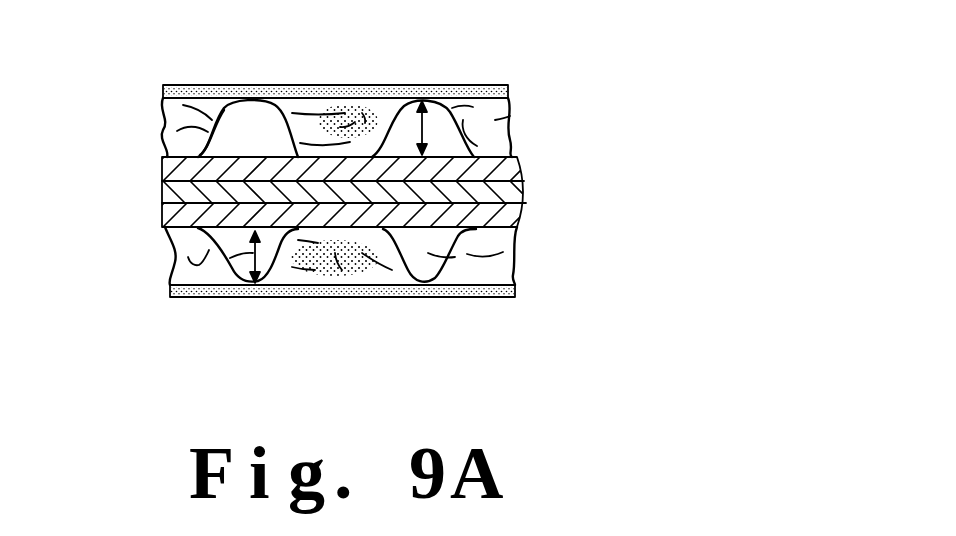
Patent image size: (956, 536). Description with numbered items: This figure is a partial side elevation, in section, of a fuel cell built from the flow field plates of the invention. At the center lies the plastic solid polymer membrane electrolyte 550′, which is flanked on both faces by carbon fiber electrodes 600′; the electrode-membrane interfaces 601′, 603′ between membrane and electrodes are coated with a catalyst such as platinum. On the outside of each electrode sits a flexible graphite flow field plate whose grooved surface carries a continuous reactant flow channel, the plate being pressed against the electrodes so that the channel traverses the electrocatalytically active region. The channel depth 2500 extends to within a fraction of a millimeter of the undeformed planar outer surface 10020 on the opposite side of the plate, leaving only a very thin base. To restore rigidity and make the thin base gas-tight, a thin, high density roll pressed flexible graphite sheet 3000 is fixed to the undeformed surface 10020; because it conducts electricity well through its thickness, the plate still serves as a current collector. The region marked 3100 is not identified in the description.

The solid polymer membrane electrolyte 550′ is at (361, 204).
The electrode-membrane interface 601′ is at (160, 180).
The electrode-membrane interface 603′ is at (160, 203).
The roll pressed flexible graphite sheet 3000 is at (292, 293).
The carbon fiber electrode 600′ is at (517, 150).
The cell 3100 is at (258, 138).
The depth of the channel 2500 is at (445, 86).
The undeformed planar outer surface 10020 is at (432, 117).